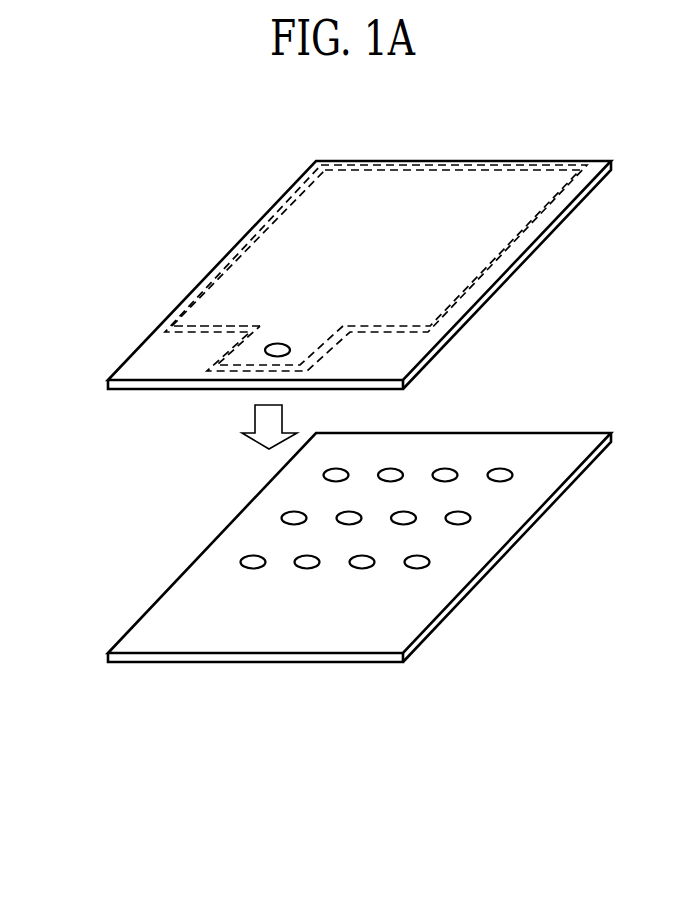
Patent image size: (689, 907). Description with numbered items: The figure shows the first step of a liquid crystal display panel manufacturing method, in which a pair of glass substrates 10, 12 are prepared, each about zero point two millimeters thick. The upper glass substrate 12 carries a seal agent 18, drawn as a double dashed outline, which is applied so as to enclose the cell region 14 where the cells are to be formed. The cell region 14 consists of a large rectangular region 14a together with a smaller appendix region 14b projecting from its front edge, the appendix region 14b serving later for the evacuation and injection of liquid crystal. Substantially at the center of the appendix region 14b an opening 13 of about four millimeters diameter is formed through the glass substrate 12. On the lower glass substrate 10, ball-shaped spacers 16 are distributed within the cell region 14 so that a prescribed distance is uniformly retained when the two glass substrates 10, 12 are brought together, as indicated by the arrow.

The glass substrate 10 is at (462, 605).
The glass substrate 12 is at (478, 310).
The opening 13 is at (290, 349).
The cell region 14 is at (326, 267).
The rectangular region 14a is at (268, 267).
The appendix region 14b is at (252, 353).
The spacers 16 is at (430, 561).
The seal agent 18 is at (540, 220).